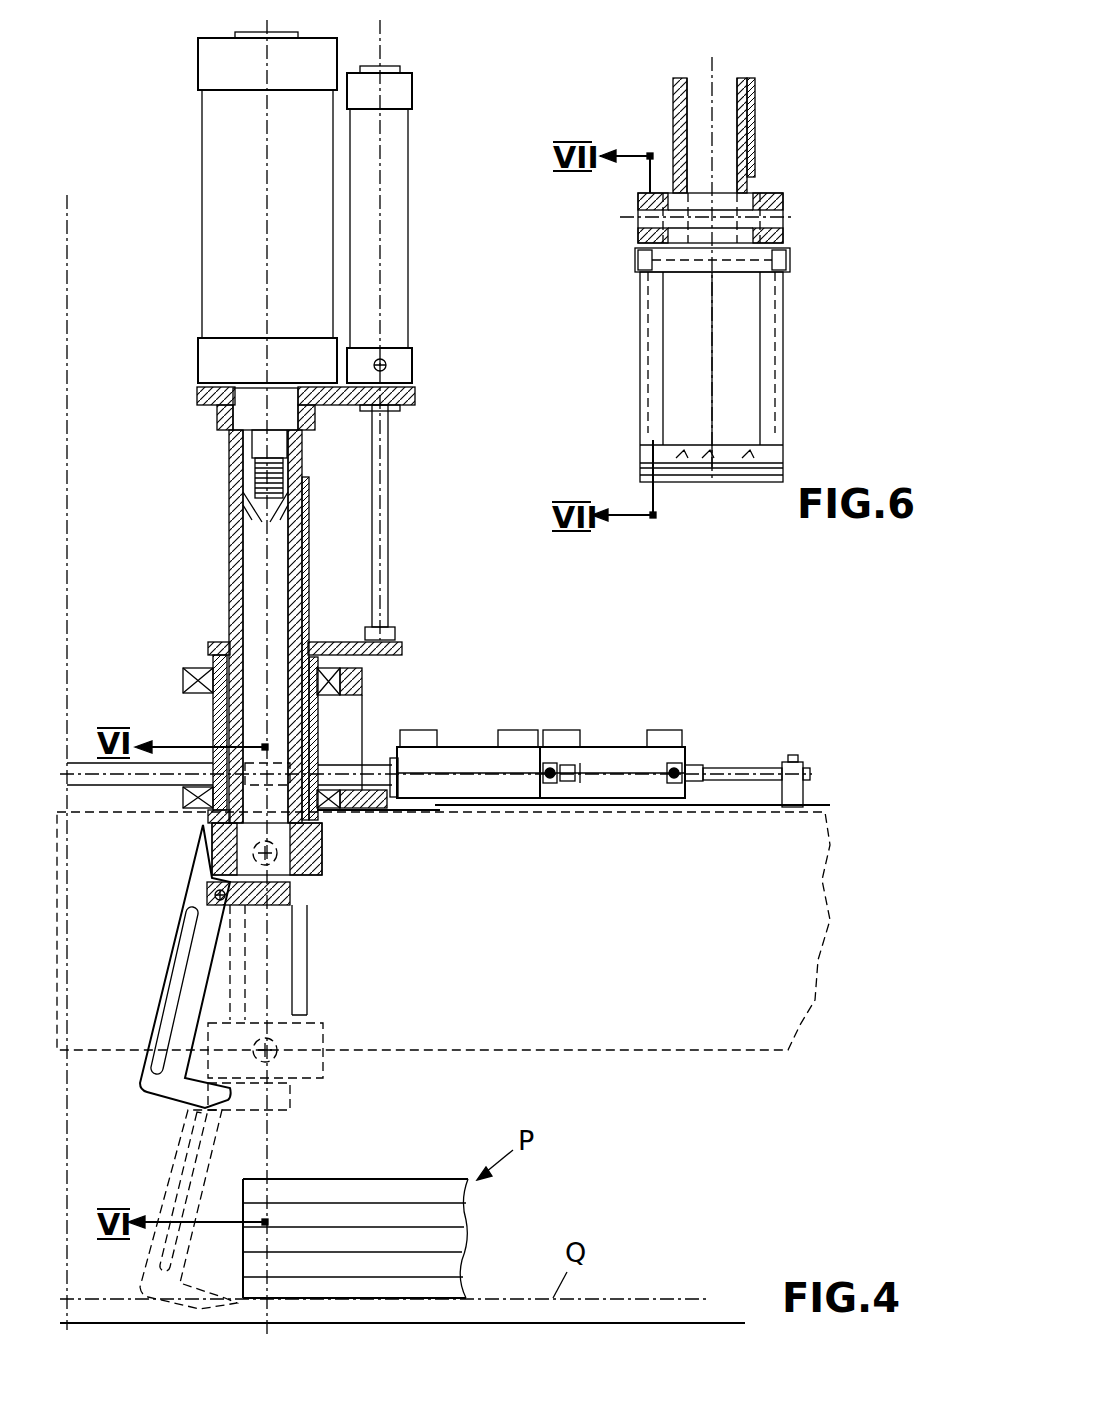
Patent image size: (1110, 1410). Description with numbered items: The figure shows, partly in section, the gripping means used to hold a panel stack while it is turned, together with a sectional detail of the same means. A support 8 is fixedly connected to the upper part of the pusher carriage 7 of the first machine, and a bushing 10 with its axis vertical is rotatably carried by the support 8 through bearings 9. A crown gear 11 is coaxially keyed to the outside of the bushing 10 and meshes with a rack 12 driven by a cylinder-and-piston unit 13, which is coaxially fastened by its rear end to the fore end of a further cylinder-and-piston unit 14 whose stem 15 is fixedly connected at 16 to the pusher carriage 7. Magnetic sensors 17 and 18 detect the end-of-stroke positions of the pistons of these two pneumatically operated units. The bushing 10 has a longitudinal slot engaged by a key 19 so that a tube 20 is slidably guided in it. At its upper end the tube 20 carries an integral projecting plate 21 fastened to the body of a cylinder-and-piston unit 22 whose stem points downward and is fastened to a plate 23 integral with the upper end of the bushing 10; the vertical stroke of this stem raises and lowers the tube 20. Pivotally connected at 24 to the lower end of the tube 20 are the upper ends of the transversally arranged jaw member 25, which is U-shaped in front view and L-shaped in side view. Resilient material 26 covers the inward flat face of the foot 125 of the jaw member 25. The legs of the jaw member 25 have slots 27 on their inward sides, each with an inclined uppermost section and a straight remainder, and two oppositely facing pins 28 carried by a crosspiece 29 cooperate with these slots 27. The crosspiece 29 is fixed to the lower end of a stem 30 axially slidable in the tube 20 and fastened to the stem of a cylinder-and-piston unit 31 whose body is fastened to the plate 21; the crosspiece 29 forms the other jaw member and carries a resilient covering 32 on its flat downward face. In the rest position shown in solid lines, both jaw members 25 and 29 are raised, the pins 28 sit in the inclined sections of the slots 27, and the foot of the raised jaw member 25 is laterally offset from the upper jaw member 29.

In FIG. 4, the pusher carriage 7 is at (835, 845).
In FIG. 4, the support 8 is at (183, 677).
In FIG. 4, the bearings 9 is at (212, 652).
In FIG. 4, the bushing 10 is at (213, 720).
In FIG. 4, the crown gear 11 is at (318, 765).
In FIG. 4, the rack 12 is at (330, 778).
In FIG. 4, the cylinder-and-piston unit 13 is at (475, 783).
In FIG. 4, the further cylinder-and-piston unit 14 is at (615, 783).
In FIG. 4, the stem 15 is at (740, 770).
In FIG. 4, the fixed connection 16 is at (798, 767).
In FIG. 4, the magnetic sensor 17 is at (438, 742).
In FIG. 4, the magnetic sensor 18 is at (580, 733).
In FIG. 4, the key 19 is at (309, 492).
In FIG. 6, the key 19 is at (754, 109).
In FIG. 4, the tube 20 is at (230, 573).
In FIG. 6, the tube 20 is at (738, 128).
In FIG. 4, the projecting plate 21 is at (413, 396).
In FIG. 4, the cylinder-and-piston unit 22 is at (403, 78).
In FIG. 4, the plate 23 is at (402, 647).
In FIG. 4, the pivot 24 is at (277, 853).
In FIG. 6, the pivot 24 is at (778, 212).
In FIG. 4, the jaw member 25 is at (180, 928).
In FIG. 6, the jaw member 25 is at (634, 308).
In FIG. 6, the resilient material 26 is at (727, 460).
In FIG. 6, the slots 27 is at (773, 353).
In FIG. 4, the pins 28 is at (218, 892).
In FIG. 6, the pins 28 is at (648, 256).
In FIG. 4, the crosspiece 29 is at (290, 900).
In FIG. 6, the crosspiece 29 is at (700, 274).
In FIG. 4, the stem 30 is at (280, 545).
In FIG. 6, the stem 30 is at (722, 93).
In FIG. 4, the cylinder-and-piston unit 31 is at (303, 52).
In FIG. 4, the covering 32 is at (290, 905).
In FIG. 6, the covering 32 is at (677, 277).
In FIG. 6, the foot 125 is at (700, 478).